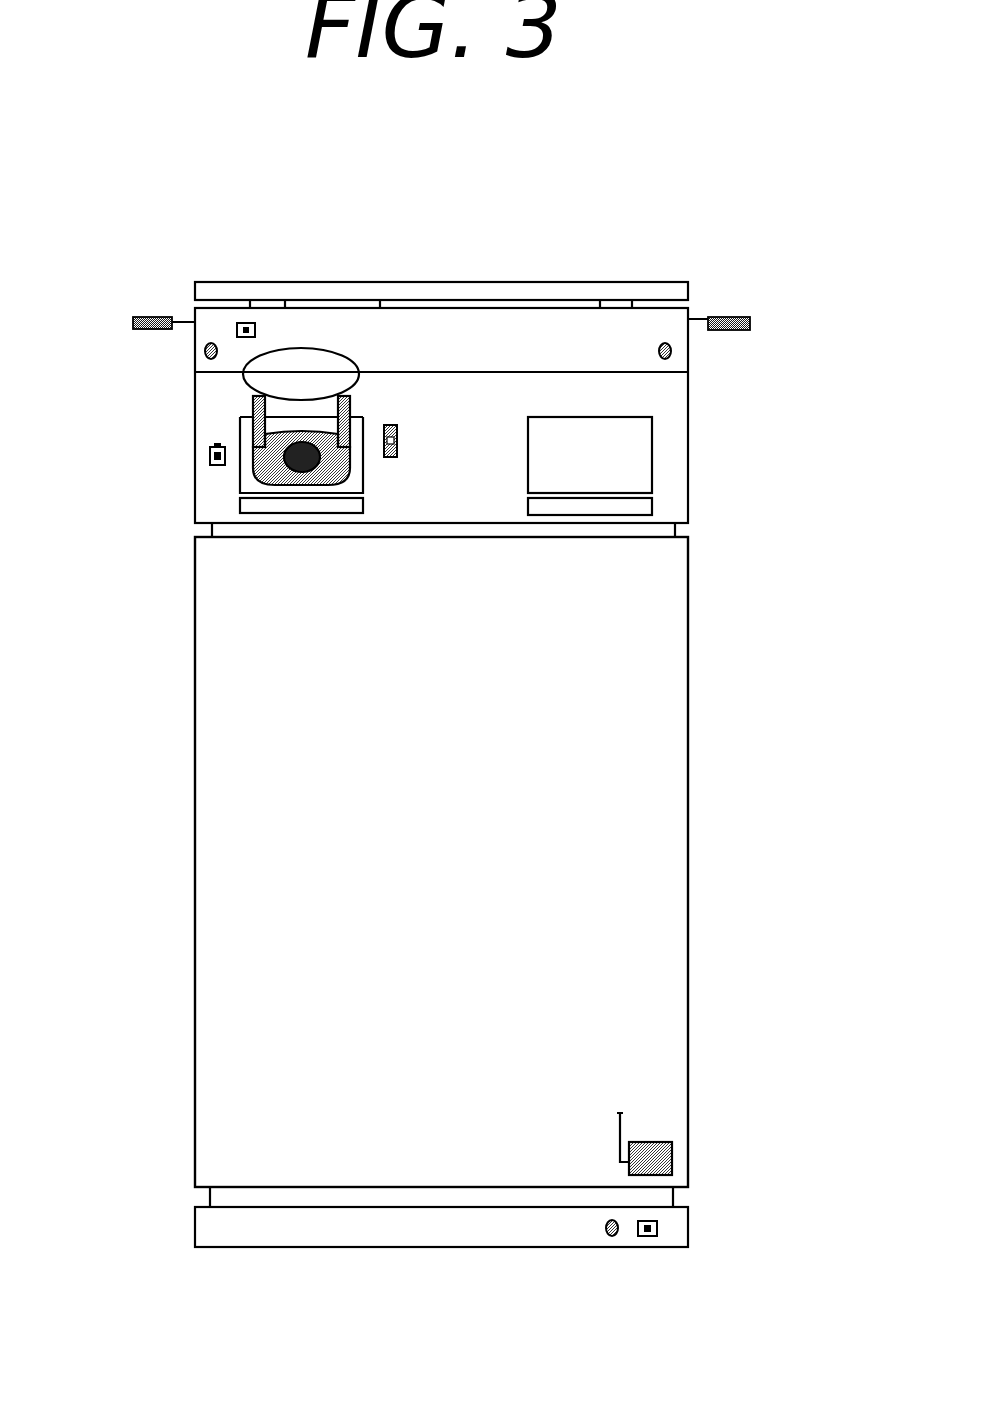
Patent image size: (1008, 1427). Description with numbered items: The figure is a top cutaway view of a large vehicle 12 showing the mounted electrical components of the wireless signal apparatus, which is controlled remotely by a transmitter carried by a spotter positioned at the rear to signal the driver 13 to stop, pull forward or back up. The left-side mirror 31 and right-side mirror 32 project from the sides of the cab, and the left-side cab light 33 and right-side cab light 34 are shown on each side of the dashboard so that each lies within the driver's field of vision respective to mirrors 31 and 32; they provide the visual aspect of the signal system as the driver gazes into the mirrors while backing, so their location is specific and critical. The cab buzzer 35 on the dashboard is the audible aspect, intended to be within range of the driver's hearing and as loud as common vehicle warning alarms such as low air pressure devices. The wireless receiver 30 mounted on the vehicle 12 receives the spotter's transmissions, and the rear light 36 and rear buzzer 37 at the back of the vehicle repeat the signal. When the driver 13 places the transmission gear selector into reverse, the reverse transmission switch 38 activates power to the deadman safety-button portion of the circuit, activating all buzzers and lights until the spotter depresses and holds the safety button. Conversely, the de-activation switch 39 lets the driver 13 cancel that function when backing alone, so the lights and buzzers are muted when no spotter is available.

The vehicle 12 is at (560, 803).
The driver 13 is at (328, 463).
The wireless receiver 30 is at (650, 1132).
The left-side mirror 31 is at (148, 305).
The right-side mirror 32 is at (726, 315).
The left-side cab light 33 is at (215, 343).
The right-side cab light 34 is at (665, 338).
The cab buzzer 35 is at (267, 328).
The rear light 36 is at (593, 1228).
The rear buzzer 37 is at (662, 1228).
The reverse transmission switch 38 is at (408, 432).
The de-activation switch 39 is at (215, 473).